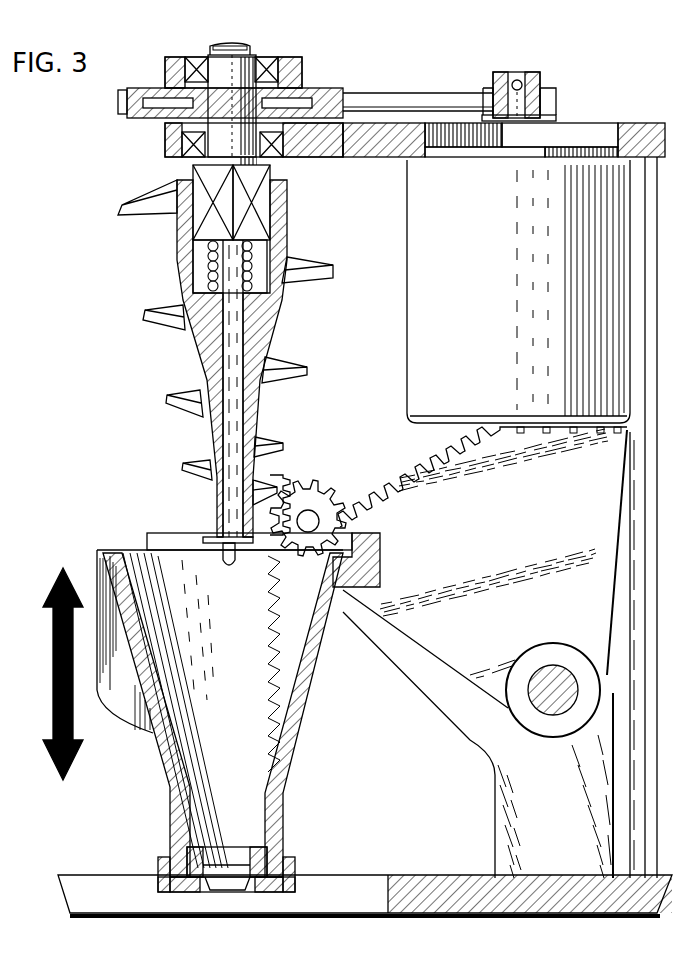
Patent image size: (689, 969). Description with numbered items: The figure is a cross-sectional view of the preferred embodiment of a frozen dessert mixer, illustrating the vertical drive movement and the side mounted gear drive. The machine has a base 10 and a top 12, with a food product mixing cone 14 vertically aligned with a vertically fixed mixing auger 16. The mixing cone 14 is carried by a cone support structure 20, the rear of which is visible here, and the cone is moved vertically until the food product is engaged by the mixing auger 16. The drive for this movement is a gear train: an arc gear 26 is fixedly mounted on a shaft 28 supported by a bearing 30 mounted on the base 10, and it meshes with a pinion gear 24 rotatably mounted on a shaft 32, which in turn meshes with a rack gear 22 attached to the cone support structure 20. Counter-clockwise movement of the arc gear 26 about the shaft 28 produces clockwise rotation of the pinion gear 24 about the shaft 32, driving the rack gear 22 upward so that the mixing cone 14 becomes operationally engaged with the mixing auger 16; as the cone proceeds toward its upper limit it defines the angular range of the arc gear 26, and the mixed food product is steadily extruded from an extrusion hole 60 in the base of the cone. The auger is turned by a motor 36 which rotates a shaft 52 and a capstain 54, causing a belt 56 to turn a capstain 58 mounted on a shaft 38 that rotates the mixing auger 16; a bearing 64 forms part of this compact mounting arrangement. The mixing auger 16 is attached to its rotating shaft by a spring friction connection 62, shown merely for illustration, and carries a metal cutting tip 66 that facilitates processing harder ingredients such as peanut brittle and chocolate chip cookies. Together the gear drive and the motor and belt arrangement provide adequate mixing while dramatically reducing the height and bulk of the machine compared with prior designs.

The base 10 is at (418, 893).
The top 12 is at (633, 138).
The food product mixing cone 14 is at (100, 590).
The mixing auger 16 is at (200, 340).
The cone support structure 20 is at (380, 563).
The rack gear 22 is at (283, 485).
The pinion gear 24 is at (320, 490).
The arc gear 26 is at (503, 445).
The shaft 28 is at (557, 702).
The bearing 30 is at (496, 823).
The shaft 32 is at (322, 528).
The motor 36 is at (407, 296).
The shaft 38 is at (250, 45).
The shaft 52 is at (513, 72).
The capstain 54 is at (553, 90).
The belt 56 is at (393, 101).
The capstain 58 is at (125, 112).
The extrusion hole 60 is at (220, 880).
The spring friction connection 62 is at (195, 178).
The bearing 64 is at (168, 57).
The metal cutting tip 66 is at (185, 540).